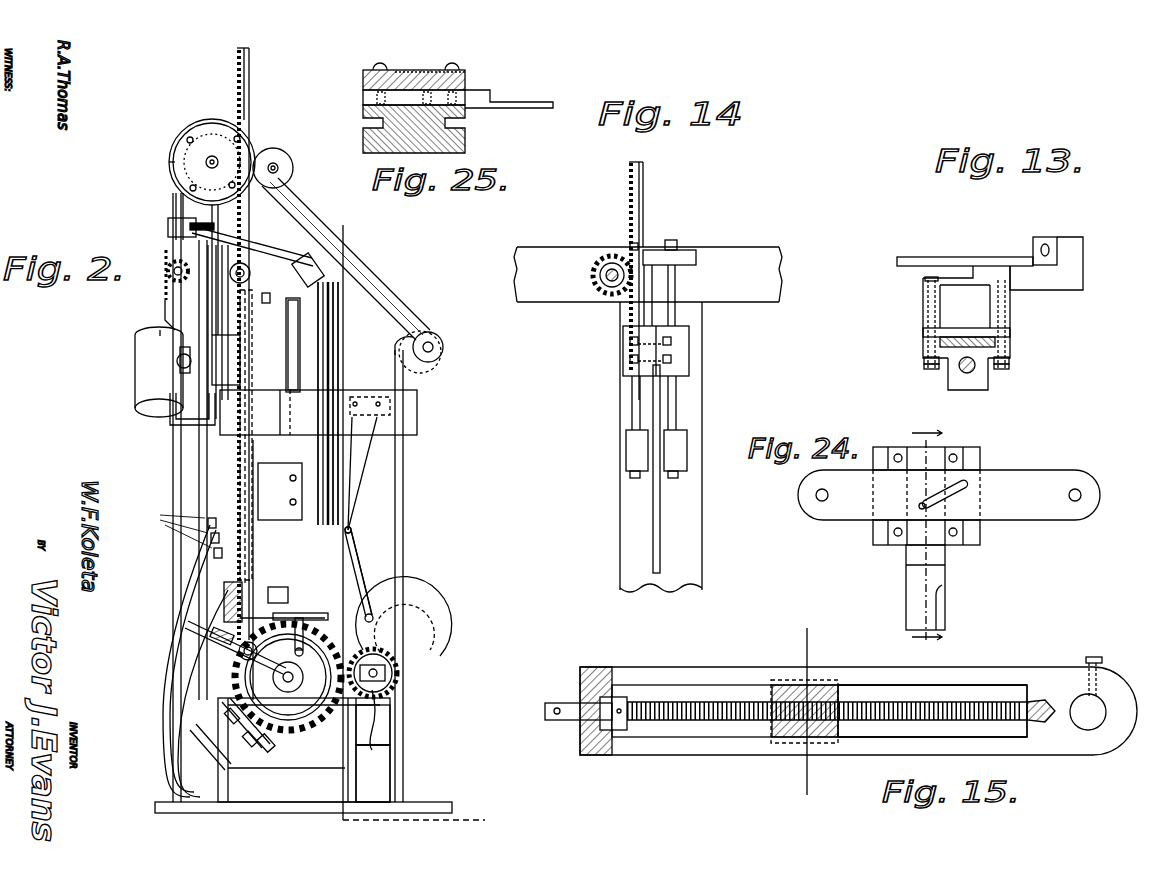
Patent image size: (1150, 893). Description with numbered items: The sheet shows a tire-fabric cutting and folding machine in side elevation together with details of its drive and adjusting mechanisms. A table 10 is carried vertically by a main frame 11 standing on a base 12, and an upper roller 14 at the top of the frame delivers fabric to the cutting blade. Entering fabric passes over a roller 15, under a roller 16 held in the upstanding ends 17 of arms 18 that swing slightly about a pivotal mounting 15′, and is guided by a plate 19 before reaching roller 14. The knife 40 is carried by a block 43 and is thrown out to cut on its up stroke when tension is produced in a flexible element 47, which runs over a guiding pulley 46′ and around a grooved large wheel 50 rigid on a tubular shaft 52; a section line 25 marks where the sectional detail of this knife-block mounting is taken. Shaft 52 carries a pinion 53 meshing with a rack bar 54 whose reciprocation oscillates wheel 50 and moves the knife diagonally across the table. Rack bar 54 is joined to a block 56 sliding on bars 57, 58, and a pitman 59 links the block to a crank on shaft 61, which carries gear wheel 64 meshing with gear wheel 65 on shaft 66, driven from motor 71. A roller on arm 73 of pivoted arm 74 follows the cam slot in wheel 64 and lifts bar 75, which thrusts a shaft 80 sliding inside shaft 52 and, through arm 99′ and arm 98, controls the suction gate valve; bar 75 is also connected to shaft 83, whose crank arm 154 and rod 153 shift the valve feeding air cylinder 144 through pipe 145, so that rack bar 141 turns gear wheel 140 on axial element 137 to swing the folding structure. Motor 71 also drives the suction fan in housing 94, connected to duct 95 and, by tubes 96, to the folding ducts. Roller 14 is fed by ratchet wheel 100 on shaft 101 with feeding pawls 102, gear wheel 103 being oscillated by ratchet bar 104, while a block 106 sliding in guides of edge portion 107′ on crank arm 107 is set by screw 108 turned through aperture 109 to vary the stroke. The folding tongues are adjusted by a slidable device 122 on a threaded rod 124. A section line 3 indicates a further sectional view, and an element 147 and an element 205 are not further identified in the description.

In FIG. 2, the section line 3 is at (418, 516).
In FIG. 2, the table 10 is at (175, 203).
In FIG. 2, the main frame 11 is at (404, 490).
In FIG. 2, the base 12 is at (440, 800).
In FIG. 2, the upper roller 14 is at (190, 128).
In FIG. 2, the roller 15 is at (430, 334).
In FIG. 2, the pivotal mounting 15′ is at (442, 347).
In FIG. 2, the roller 16 is at (284, 160).
In FIG. 15, the roller 16 is at (803, 706).
In FIG. 2, the upstanding ends 17 is at (280, 170).
In FIG. 2, the arms 18 is at (380, 295).
In FIG. 2, the plate 19 is at (358, 266).
In FIG. 24, the section line 25— 25 is at (927, 535).
In FIG. 25, the knife 40 is at (522, 109).
In FIG. 24, the knife 40 is at (946, 591).
In FIG. 24, the block 43 is at (1038, 512).
In FIG. 2, the guiding pulley 46′ is at (312, 254).
In FIG. 2, the flexible element 47 is at (297, 265).
In FIG. 2, the large wheel 50 is at (318, 515).
In FIG. 14, the tubular shaft 52 is at (608, 287).
In FIG. 14, the pinion 53 is at (604, 256).
In FIG. 2, the rack bar 54 is at (290, 323).
In FIG. 14, the rack bar 54 is at (641, 218).
In FIG. 14, the block 56 is at (690, 352).
In FIG. 2, the bar 57 is at (300, 575).
In FIG. 14, the bar 57 is at (636, 404).
In FIG. 14, the bar 58 is at (678, 398).
In FIG. 14, the pitman 59 is at (662, 526).
In FIG. 2, the shaft 61 is at (238, 660).
In FIG. 2, the gear wheel 64 is at (288, 765).
In FIG. 2, the gear wheel 65 is at (365, 725).
In FIG. 2, the shaft 66 is at (400, 670).
In FIG. 13, the motor 71 is at (1010, 340).
In FIG. 2, the arm 73 is at (300, 612).
In FIG. 2, the pivoted arm 74 is at (355, 566).
In FIG. 2, the bar 75 is at (336, 560).
In FIG. 14, the shaft 80 is at (605, 275).
In FIG. 2, the shaft 83 is at (166, 271).
In FIG. 2, the housing 94 is at (445, 612).
In FIG. 2, the duct 95 is at (327, 778).
In FIG. 2, the tubular members 96 is at (178, 700).
In FIG. 2, the arm 98 is at (400, 578).
In FIG. 2, the arm 99′ is at (352, 537).
In FIG. 2, the ratchet wheel 100 is at (168, 168).
In FIG. 2, the shaft 101 is at (220, 160).
In FIG. 2, the feeding pawls 102 is at (245, 106).
In FIG. 2, the gear wheel 103 is at (180, 148).
In FIG. 2, the ratchet bar 104 is at (242, 86).
In FIG. 2, the block 106 is at (222, 636).
In FIG. 15, the block 106 is at (838, 688).
In FIG. 2, the crank arm 107 is at (205, 628).
In FIG. 15, the crank arm 107 is at (926, 672).
In FIG. 15, the edge portion 107′ is at (975, 688).
In FIG. 15, the screw 108 is at (665, 712).
In FIG. 15, the aperture 109 is at (556, 702).
In FIG. 13, the vertically slidable device 122 is at (978, 390).
In FIG. 13, the vertical rod 124 is at (960, 372).
In FIG. 2, the axial element 137 is at (163, 284).
In FIG. 2, the gear wheel 140 is at (165, 333).
In FIG. 2, the rack bar 141 is at (163, 272).
In FIG. 2, the air cylinder 144 is at (140, 380).
In FIG. 2, the pipe 145 is at (172, 410).
In FIG. 2, the block 147 is at (232, 368).
In FIG. 2, the rod 153 is at (228, 307).
In FIG. 2, the crank arm 154 is at (226, 236).
In FIG. 2, the guide 205 is at (243, 515).